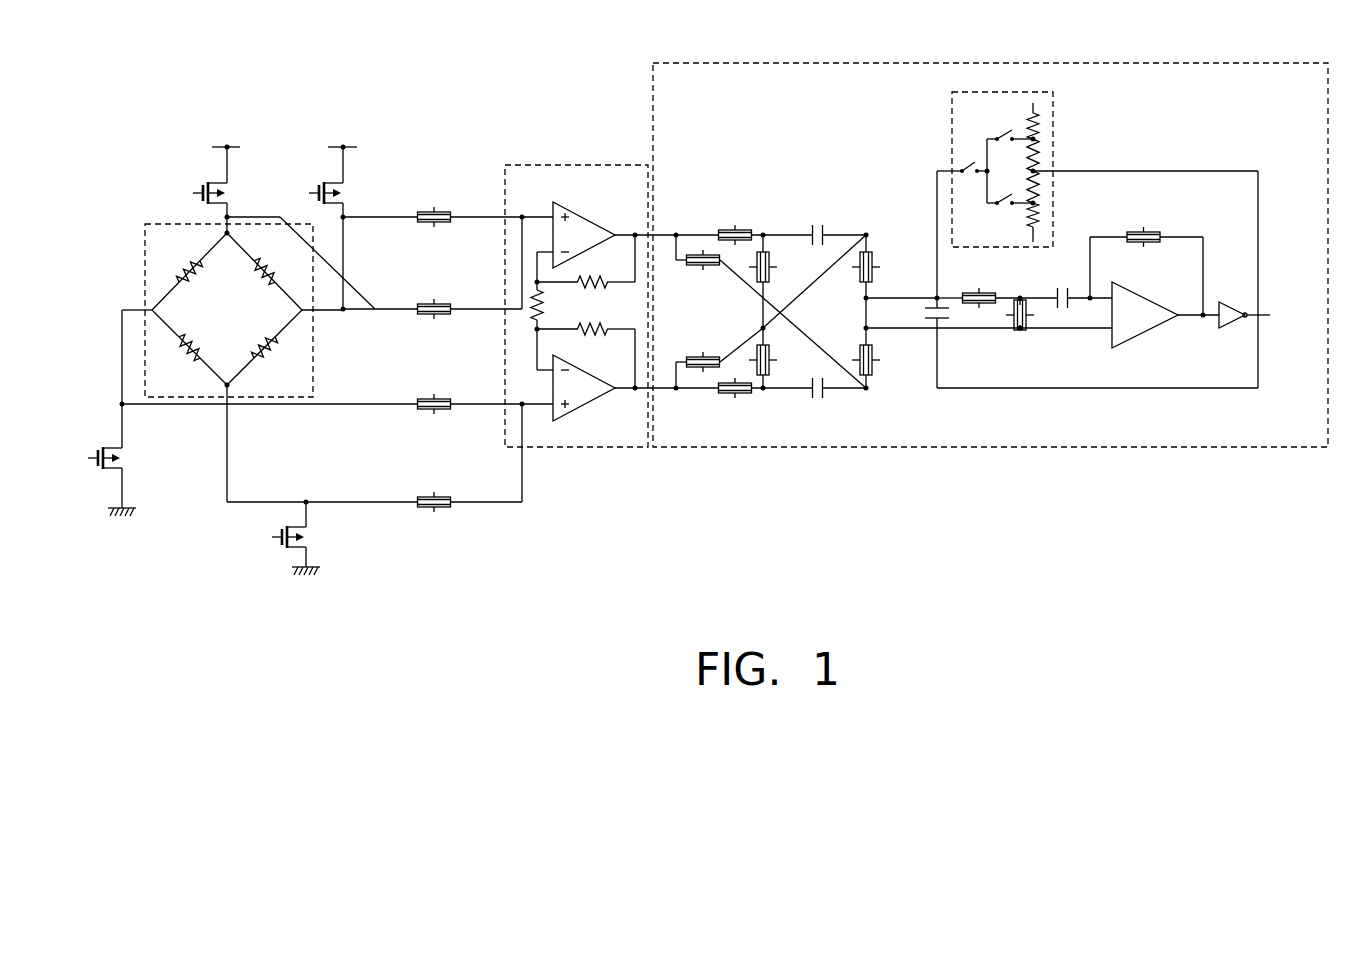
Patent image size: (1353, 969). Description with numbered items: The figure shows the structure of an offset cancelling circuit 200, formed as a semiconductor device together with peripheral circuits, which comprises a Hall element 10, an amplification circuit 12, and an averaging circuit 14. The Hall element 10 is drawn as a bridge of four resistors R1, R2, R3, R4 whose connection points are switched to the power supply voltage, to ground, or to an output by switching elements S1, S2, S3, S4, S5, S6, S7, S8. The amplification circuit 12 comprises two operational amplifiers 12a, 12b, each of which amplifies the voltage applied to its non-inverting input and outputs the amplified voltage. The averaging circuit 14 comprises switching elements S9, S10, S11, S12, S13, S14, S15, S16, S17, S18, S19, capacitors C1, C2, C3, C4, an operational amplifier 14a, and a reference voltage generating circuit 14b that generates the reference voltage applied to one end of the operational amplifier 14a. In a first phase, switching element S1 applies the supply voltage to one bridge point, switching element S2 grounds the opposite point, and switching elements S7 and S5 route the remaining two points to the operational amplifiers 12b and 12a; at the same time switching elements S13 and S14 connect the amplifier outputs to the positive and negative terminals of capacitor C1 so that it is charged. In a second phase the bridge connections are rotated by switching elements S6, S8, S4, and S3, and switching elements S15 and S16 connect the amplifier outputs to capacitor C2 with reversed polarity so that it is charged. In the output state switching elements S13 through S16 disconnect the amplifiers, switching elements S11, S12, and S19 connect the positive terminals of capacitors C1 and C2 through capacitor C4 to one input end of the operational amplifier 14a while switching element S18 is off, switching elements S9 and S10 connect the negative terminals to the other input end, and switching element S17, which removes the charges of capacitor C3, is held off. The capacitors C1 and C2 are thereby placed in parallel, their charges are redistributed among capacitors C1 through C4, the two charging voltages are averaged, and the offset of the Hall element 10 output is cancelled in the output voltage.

The offset cancelling circuit 200 is at (758, 579).
The Hall element 10 is at (169, 223).
The amplification circuit 12 is at (525, 171).
The operational amplifier 12a is at (580, 219).
The operational amplifier 12b is at (580, 373).
The averaging circuit 14 is at (687, 71).
The operational amplifier 14a is at (1148, 294).
The reference voltage generating circuit 14b is at (952, 108).
The resistor R1 is at (189, 347).
The resistor R2 is at (264, 347).
The resistor R3 is at (264, 271).
The resistor R4 is at (189, 271).
The switching element S1 is at (222, 190).
The switching element S2 is at (301, 538).
The switching element S3 is at (339, 228).
The switching element S4 is at (112, 481).
The switching element S5 is at (448, 202).
The switching element S6 is at (432, 294).
The switching element S7 is at (337, 389).
The switching element S8 is at (374, 487).
The switching element S9 is at (774, 281).
The switching element S10 is at (778, 358).
The switching element S11 is at (881, 281).
The switching element S12 is at (881, 358).
The switching element S13 is at (744, 401).
The switching element S14 is at (771, 311).
The switching element S15 is at (744, 221).
The switching element S16 is at (719, 354).
The switching element S17 is at (1019, 329).
The switching element S18 is at (1146, 258).
The switching element S19 is at (997, 282).
The capacitor C1 is at (836, 378).
The capacitor C2 is at (836, 225).
The capacitor C3 is at (925, 343).
The capacitor C4 is at (1083, 287).